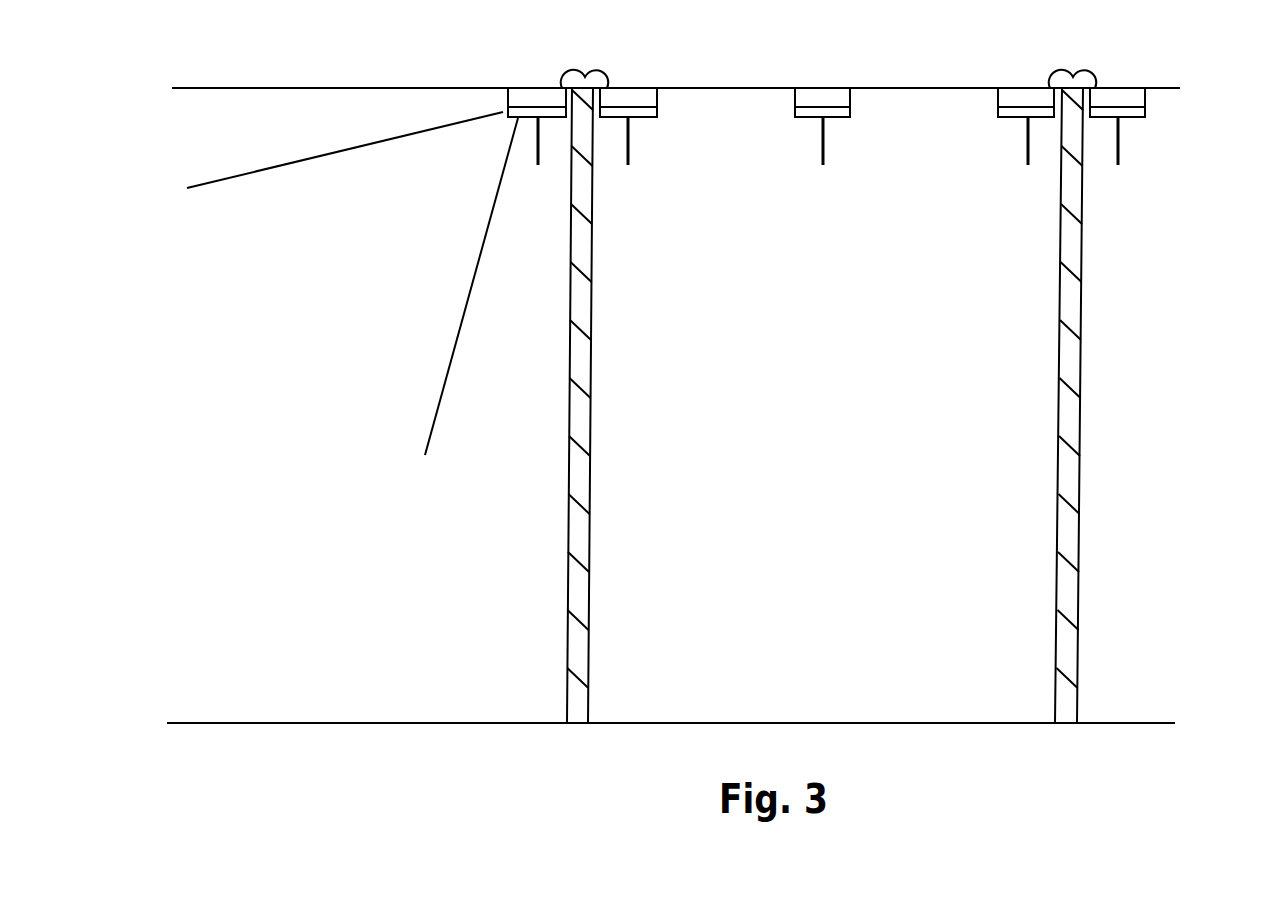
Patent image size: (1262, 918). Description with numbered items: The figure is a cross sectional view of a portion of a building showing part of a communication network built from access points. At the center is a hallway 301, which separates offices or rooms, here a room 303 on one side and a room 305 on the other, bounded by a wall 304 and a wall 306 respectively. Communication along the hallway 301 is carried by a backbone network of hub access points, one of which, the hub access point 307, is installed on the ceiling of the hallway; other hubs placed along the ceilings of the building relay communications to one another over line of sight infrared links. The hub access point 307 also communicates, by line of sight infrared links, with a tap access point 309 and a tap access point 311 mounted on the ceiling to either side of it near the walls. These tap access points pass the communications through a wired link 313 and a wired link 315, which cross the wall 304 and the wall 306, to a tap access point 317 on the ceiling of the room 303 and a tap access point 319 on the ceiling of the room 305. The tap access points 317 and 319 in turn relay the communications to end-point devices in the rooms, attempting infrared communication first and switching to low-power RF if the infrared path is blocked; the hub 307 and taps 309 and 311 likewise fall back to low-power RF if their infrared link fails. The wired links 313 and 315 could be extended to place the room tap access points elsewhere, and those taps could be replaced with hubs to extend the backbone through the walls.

The hallway 301 is at (940, 372).
The room 303 is at (475, 400).
The wall 304 is at (583, 380).
The room 305 is at (1122, 353).
The wall 306 is at (1072, 443).
The hub access point 307 is at (835, 97).
The tap access point 309 is at (645, 97).
The tap access point 311 is at (1012, 97).
The wired link 313 is at (585, 73).
The wired link 315 is at (1075, 73).
The tap access point 317 is at (547, 97).
The tap access point 319 is at (1133, 97).